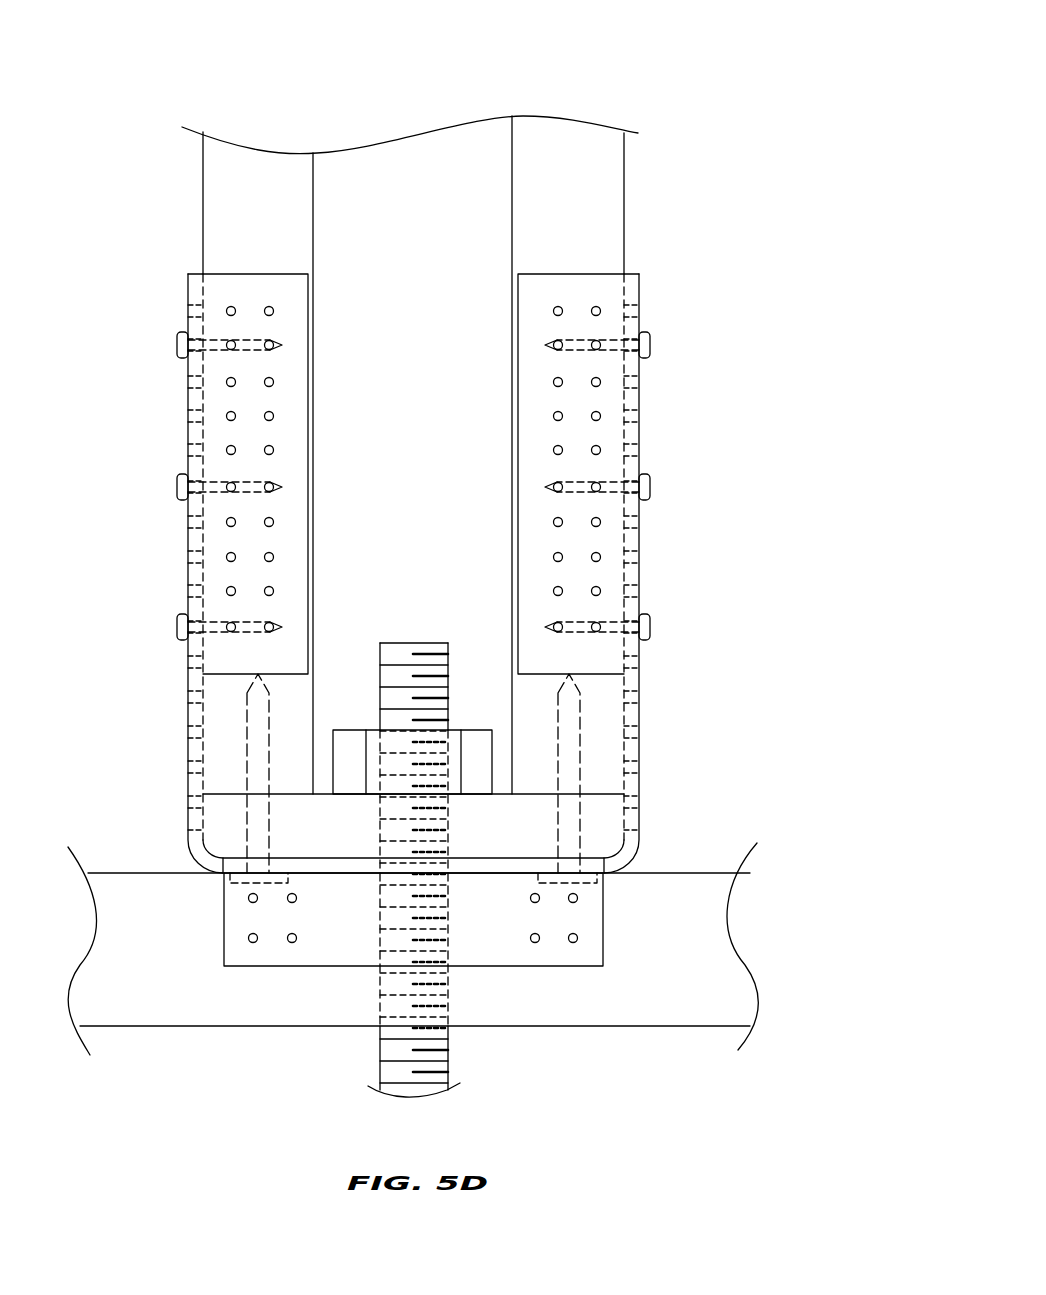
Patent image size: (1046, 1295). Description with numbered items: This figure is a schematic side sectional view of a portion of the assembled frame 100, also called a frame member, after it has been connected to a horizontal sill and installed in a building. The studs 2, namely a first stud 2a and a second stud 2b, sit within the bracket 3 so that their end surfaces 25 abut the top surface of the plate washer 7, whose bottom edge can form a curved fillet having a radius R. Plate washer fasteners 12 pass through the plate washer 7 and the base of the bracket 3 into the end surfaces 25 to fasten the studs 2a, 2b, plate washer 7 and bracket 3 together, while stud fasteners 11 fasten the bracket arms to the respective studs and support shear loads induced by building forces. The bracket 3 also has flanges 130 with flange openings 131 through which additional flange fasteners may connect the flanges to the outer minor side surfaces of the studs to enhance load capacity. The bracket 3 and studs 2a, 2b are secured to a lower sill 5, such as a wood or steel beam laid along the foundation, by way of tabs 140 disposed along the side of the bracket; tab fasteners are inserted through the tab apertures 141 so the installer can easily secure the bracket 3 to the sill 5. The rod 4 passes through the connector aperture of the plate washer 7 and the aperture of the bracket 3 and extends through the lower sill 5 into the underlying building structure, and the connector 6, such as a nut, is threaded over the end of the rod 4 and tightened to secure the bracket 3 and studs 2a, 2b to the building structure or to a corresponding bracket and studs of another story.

The frame 100 is at (658, 46).
The studs 2 is at (188, 206).
The first stud 2a is at (250, 178).
The second stud 2b is at (590, 176).
The bracket 3 is at (641, 432).
The flanges 130 is at (605, 329).
The flange openings 131 is at (272, 450).
The stud fasteners 11 is at (177, 487).
The rod 4 is at (447, 1070).
The connector 6 is at (477, 741).
The plate washer 7 is at (313, 830).
The end surfaces 25 is at (233, 795).
The radius R is at (193, 865).
The lower sill 5 is at (683, 897).
The plate washer fasteners 12 is at (590, 883).
The tabs 140 is at (472, 940).
The tab apertures 141 is at (253, 945).